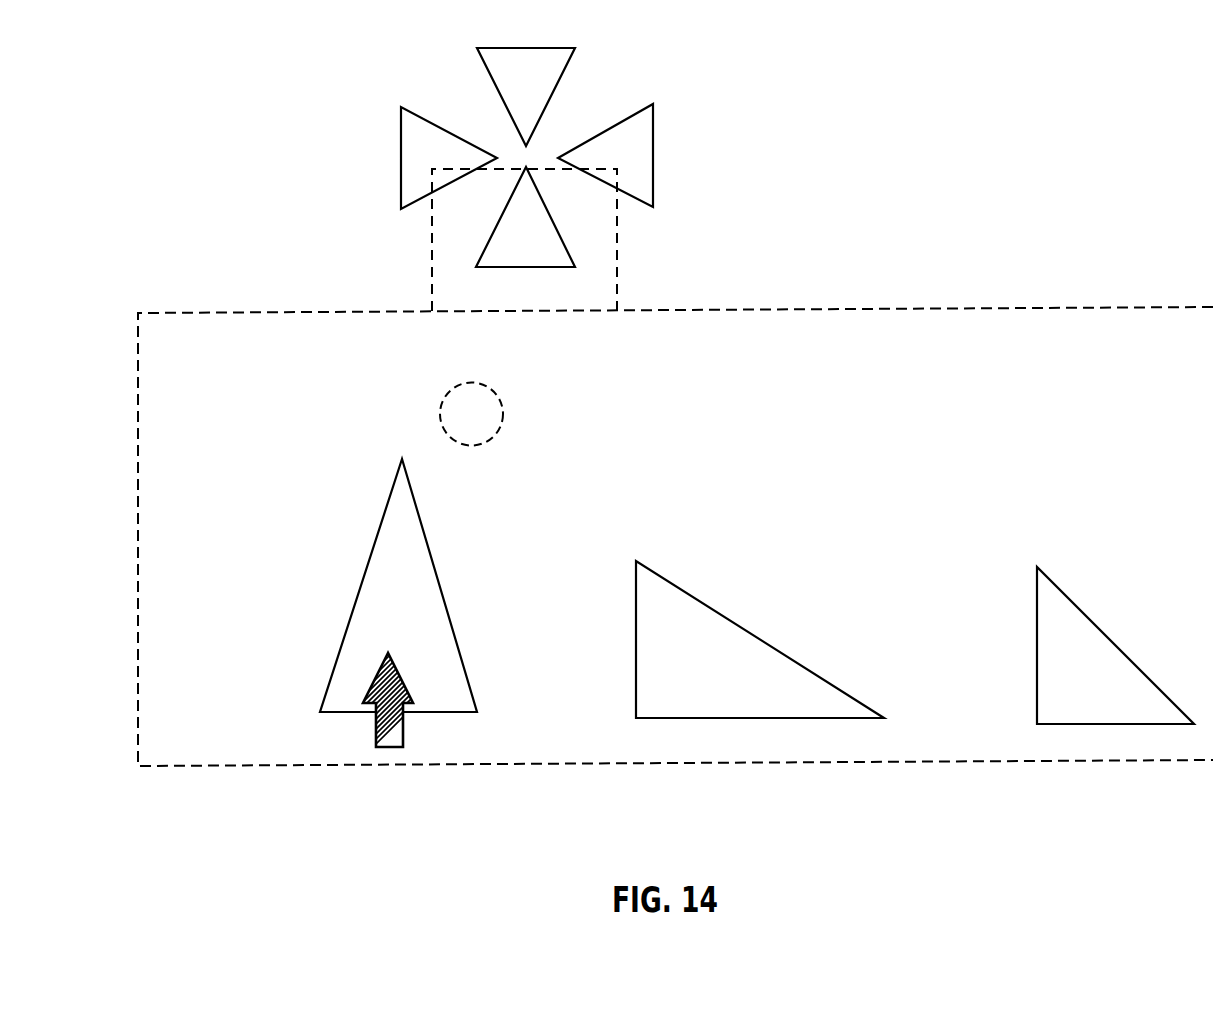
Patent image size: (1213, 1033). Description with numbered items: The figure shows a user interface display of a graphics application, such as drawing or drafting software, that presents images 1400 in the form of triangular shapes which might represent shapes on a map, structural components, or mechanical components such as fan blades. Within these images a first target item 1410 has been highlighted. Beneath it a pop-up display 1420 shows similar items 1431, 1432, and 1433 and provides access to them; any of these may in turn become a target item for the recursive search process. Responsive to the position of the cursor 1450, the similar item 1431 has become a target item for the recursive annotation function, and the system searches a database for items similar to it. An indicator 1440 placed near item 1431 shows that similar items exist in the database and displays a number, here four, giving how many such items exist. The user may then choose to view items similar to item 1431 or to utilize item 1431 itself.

The images 1400 is at (352, 127).
The first target item 1410 is at (490, 247).
The pop-up display 1420 is at (920, 762).
The similar item 1431 is at (338, 650).
The similar item 1432 is at (632, 683).
The similar item 1433 is at (1035, 682).
The indicator 1440 is at (497, 430).
The cursor 1450 is at (403, 732).